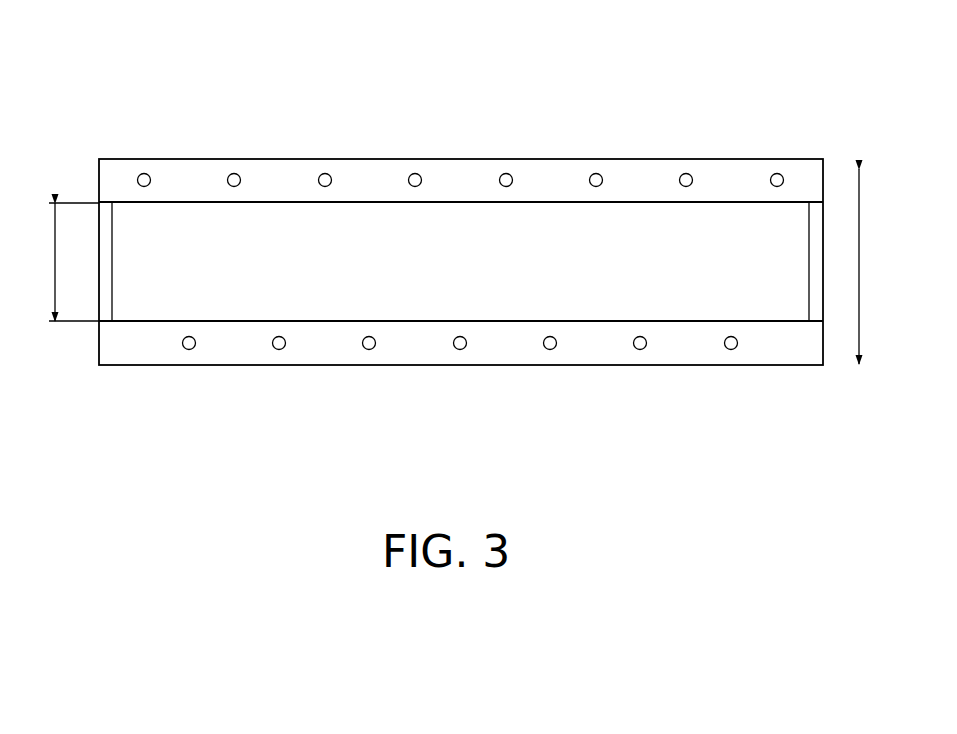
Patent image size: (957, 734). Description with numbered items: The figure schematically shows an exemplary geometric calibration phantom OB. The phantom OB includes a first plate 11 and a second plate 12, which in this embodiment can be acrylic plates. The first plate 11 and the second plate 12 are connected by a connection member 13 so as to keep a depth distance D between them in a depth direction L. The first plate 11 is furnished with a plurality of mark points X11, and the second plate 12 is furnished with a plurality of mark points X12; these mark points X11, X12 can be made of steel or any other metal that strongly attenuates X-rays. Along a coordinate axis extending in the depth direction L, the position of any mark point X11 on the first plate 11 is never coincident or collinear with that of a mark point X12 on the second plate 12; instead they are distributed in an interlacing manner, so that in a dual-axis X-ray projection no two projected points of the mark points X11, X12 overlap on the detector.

The geometric calibration phantom OB is at (143, 80).
The first plate 11 is at (106, 178).
The second plate 12 is at (106, 357).
The connection member 13 is at (106, 255).
The mark points X11 is at (417, 175).
The mark points X12 is at (462, 349).
The depth distance D is at (64, 262).
The depth direction L is at (875, 266).